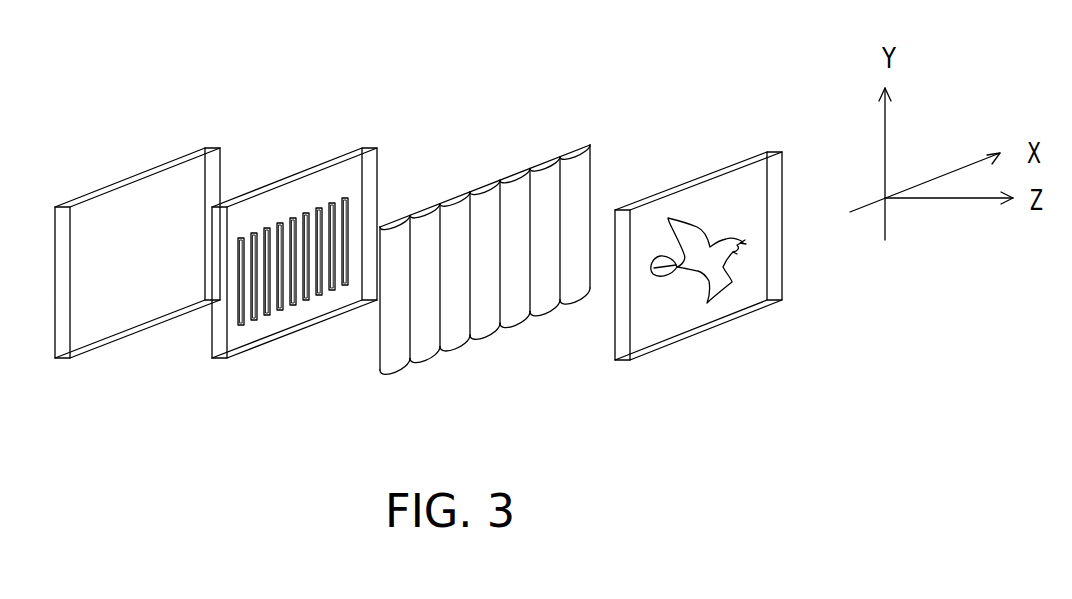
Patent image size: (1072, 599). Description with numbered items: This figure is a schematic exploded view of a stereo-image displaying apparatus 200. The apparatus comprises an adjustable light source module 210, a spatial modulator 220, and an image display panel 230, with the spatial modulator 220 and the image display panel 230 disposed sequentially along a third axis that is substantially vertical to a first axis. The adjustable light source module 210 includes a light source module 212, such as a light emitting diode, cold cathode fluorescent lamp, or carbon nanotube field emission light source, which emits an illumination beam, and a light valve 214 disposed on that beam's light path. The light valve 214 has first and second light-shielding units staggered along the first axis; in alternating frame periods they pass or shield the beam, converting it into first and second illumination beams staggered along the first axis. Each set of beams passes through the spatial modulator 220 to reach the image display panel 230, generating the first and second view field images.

The stereo-image displaying apparatus 200 is at (958, 413).
The adjustable light source module 210 is at (295, 71).
The light source module 212 is at (148, 207).
The light valve 214 is at (290, 203).
The spatial modulator 220 is at (487, 213).
The image display panel 230 is at (717, 198).